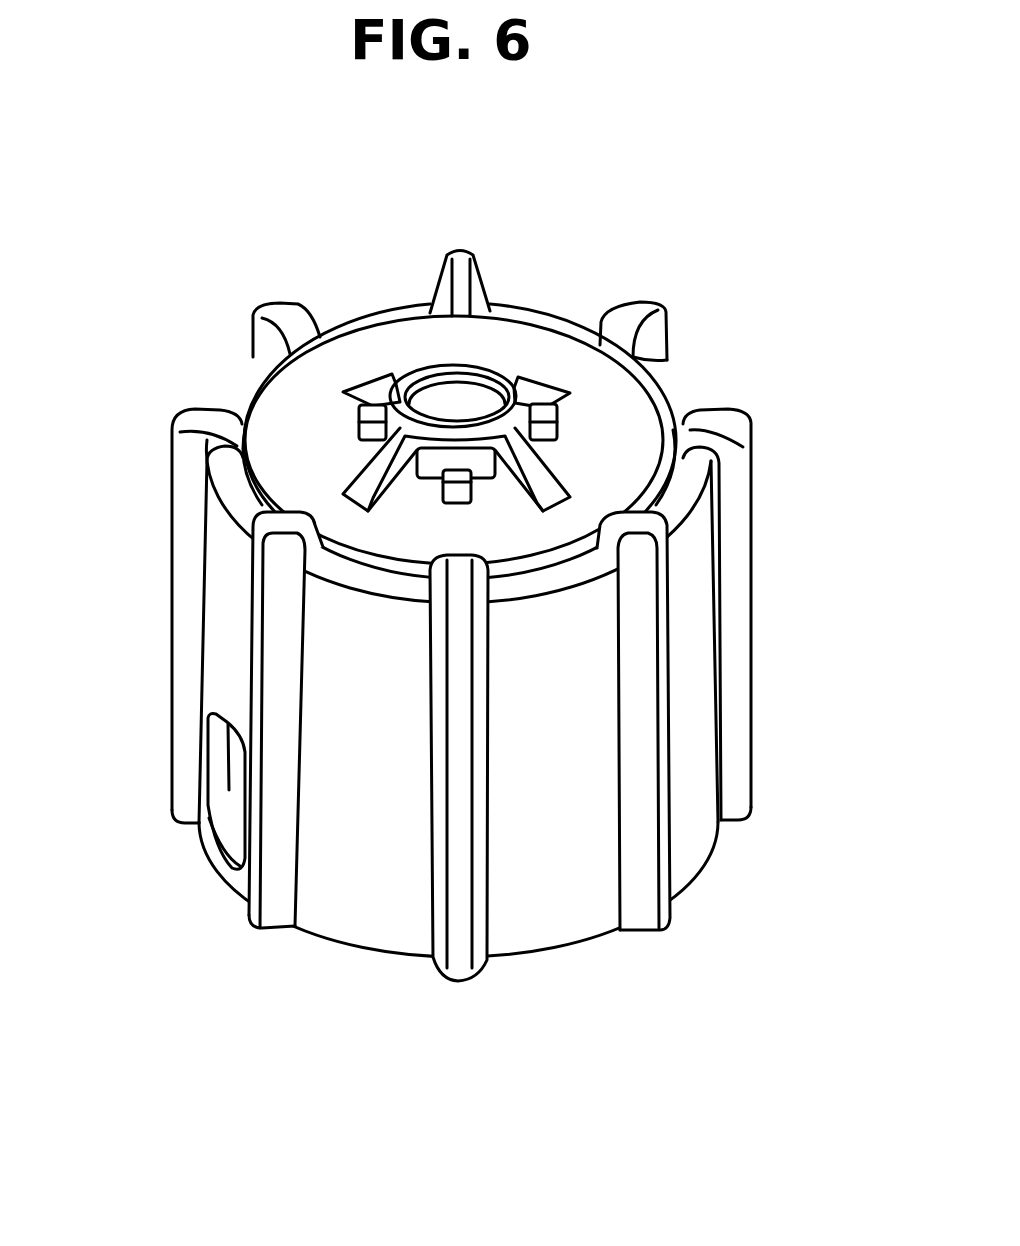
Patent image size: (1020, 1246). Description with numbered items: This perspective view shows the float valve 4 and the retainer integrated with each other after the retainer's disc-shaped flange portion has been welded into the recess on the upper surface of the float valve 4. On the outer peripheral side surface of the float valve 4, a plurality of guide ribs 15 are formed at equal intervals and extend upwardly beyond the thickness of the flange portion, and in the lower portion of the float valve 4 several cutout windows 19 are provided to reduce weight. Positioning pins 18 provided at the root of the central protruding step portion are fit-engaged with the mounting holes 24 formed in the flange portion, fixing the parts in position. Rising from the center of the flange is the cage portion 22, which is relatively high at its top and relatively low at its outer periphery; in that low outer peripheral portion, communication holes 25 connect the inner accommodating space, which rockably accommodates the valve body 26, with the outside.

The float valve 4 is at (693, 752).
The guide ribs 15 is at (657, 330).
The positioning pins 18 is at (370, 413).
The cutout windows 19 is at (232, 790).
The cage portion 22 is at (533, 375).
The mounting holes 24 is at (348, 437).
The communication holes 25 is at (478, 474).
The valve body 26 is at (460, 390).